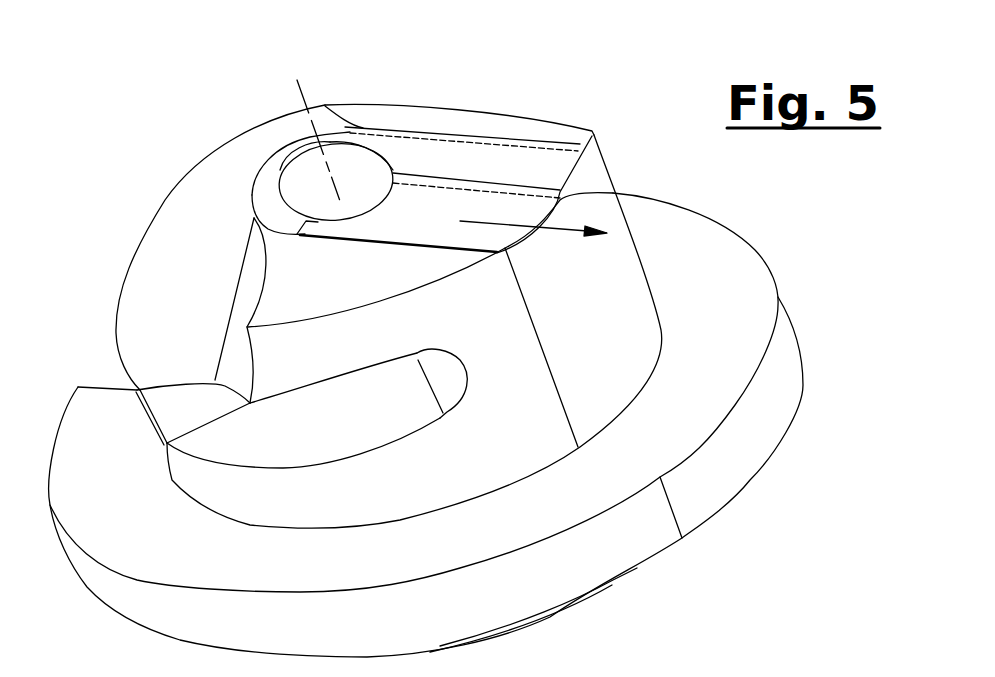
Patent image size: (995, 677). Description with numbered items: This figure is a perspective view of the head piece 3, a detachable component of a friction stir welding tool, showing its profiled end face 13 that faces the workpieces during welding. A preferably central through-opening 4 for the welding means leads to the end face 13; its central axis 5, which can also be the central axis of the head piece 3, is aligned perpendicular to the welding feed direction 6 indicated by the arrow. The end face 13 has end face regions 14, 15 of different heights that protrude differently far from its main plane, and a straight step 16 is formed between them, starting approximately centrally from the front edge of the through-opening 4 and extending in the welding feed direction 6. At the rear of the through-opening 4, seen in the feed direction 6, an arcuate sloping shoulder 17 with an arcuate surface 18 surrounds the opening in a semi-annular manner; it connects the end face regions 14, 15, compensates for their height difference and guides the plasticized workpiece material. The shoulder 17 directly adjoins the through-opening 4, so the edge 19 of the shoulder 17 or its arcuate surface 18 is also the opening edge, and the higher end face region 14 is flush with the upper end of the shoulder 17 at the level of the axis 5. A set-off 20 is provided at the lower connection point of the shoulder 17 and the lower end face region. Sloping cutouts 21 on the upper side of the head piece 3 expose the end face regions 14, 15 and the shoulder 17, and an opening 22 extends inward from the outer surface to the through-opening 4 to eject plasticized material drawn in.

The head piece 3 is at (713, 480).
The through-opening 4 is at (323, 178).
The central axis 5 is at (297, 80).
The welding feed direction 6 is at (560, 233).
The end face 13 is at (590, 110).
The end face region 14 is at (490, 158).
The end face region 15 is at (413, 213).
The straight step 16 is at (560, 193).
The sloping shoulder 17 is at (328, 138).
The arcuate surface 18 is at (361, 106).
The edge 19 is at (280, 190).
The set-off 20 is at (302, 225).
The sloping cutouts 21 is at (468, 118).
The opening 22 is at (388, 412).